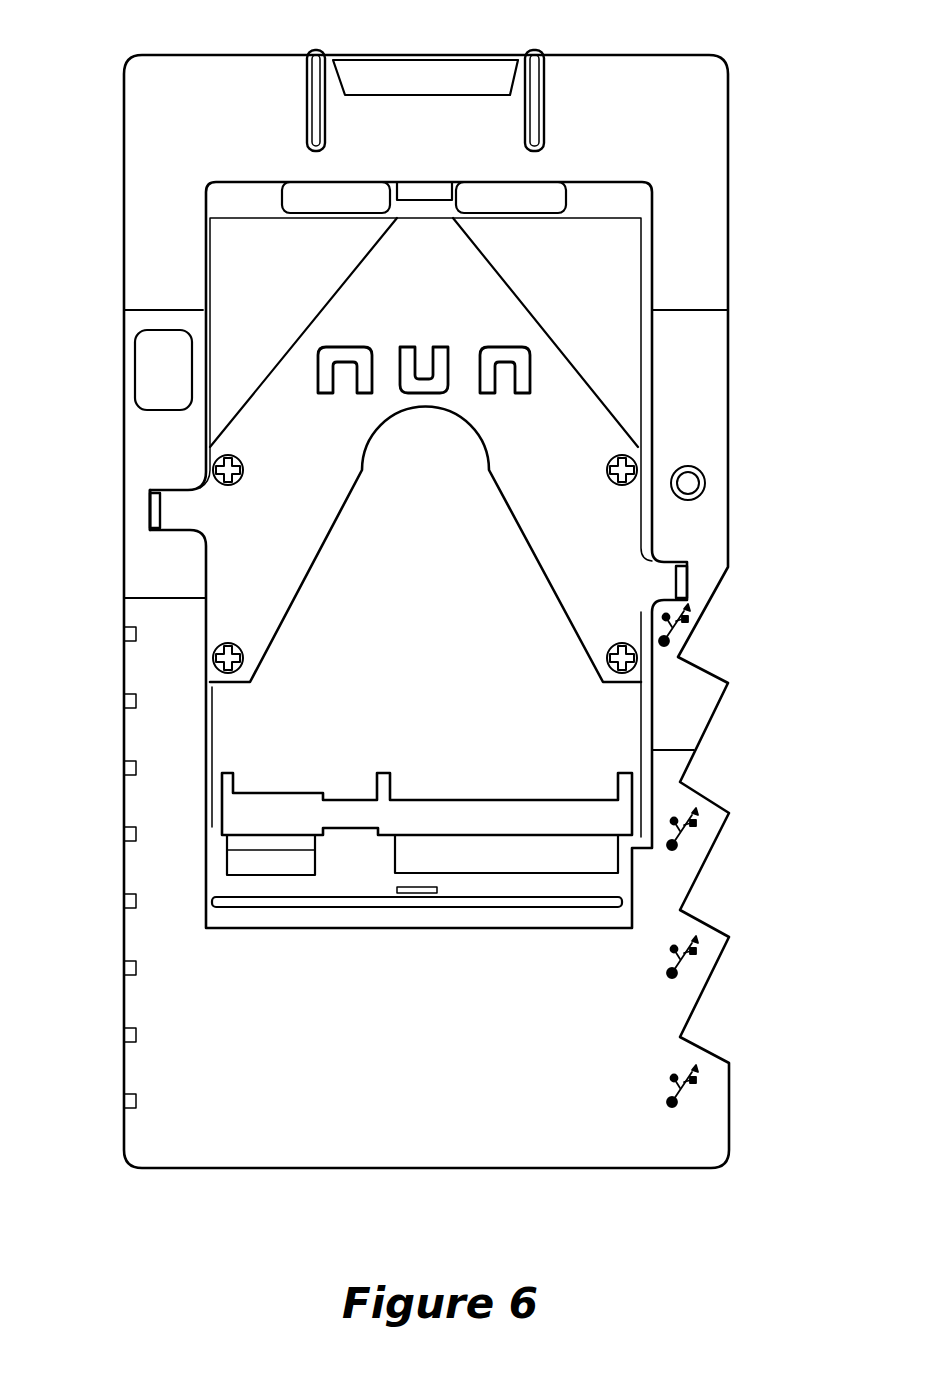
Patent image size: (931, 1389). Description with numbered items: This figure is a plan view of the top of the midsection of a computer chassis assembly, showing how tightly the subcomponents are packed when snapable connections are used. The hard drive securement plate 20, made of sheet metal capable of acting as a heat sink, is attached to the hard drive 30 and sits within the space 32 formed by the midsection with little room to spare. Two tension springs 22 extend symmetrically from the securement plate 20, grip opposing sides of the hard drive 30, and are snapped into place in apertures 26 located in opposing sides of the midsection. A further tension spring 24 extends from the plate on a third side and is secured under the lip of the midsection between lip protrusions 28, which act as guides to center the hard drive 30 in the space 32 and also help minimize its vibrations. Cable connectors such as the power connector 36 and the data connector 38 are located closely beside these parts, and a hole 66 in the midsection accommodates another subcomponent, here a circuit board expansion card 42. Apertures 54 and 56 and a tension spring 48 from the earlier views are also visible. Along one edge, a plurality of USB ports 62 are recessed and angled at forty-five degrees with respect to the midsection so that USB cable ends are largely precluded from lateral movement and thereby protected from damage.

The hard drive securement plate 20 is at (573, 463).
The tension springs 22 is at (657, 580).
The tension spring 24 is at (424, 218).
The apertures 26 is at (150, 518).
The lip protrusions 28 is at (337, 203).
The hard drive 30 is at (438, 660).
The space 32 is at (633, 199).
The power connector 36 is at (282, 862).
The data connector 38 is at (432, 860).
The circuit board expansion card 42 is at (532, 900).
The tension spring 48 is at (437, 72).
The aperture 54 is at (157, 365).
The apertures 56 is at (335, 353).
The USB ports 62 is at (707, 663).
The hole 66 is at (357, 868).